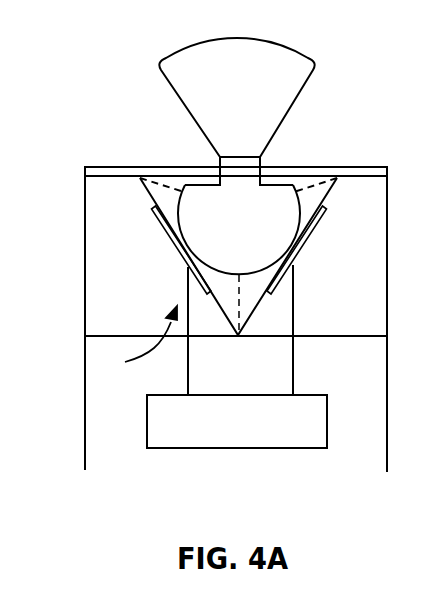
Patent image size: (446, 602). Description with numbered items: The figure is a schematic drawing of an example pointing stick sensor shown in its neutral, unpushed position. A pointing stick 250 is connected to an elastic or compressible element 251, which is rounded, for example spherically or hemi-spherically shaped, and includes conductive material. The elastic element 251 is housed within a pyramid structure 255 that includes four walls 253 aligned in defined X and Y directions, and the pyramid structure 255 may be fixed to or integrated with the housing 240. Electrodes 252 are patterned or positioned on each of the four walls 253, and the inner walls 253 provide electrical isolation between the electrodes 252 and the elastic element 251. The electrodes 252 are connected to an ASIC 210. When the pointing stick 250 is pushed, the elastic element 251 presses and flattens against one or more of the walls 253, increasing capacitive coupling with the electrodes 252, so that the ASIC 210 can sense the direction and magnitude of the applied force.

The ASIC 210 is at (177, 448).
The housing 240 is at (84, 412).
The pointing stick 250 is at (163, 74).
The elastic element 251 is at (252, 250).
The electrodes 252 is at (172, 242).
The walls 253 is at (147, 188).
The pyramid structure 255 is at (141, 349).